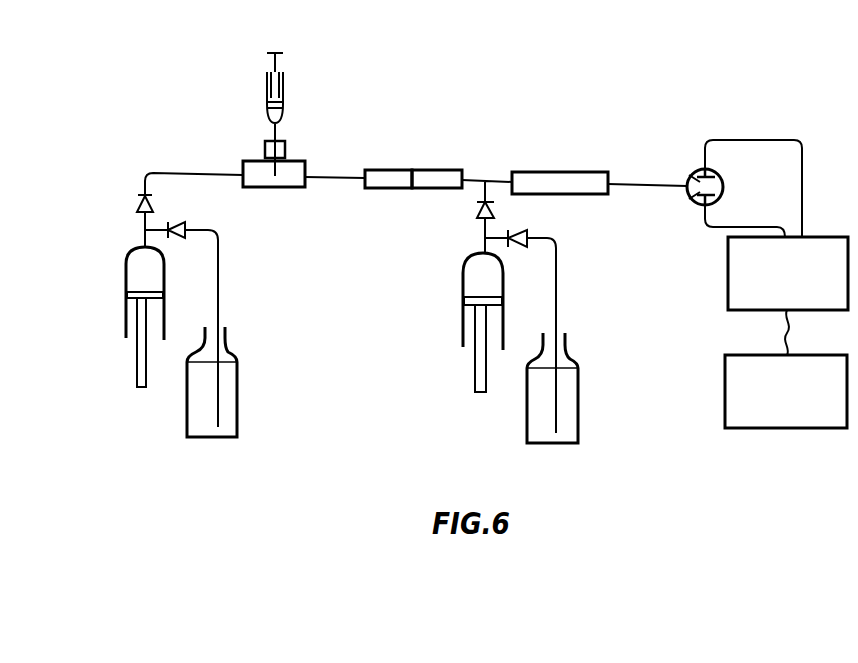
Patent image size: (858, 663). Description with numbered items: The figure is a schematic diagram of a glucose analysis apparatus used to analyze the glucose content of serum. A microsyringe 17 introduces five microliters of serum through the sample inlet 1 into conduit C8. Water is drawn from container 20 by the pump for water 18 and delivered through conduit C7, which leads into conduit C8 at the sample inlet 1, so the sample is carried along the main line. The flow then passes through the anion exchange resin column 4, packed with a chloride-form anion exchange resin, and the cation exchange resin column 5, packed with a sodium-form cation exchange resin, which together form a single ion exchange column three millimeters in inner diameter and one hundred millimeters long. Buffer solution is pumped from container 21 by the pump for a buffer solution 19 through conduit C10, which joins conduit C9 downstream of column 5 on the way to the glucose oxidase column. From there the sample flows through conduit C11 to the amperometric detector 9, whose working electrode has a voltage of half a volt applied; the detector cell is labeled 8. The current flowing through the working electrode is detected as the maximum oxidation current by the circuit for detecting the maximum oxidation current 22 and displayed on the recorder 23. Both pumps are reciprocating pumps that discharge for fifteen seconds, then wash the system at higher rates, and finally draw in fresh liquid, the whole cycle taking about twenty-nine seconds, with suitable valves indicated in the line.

The sample inlet 1 is at (293, 150).
The anion exchange resin column 4 is at (389, 170).
The cation exchange resin column 5 is at (441, 170).
The detector cell 8 is at (693, 184).
The amperometric detector 9 is at (723, 183).
The microsyringe 17 is at (292, 76).
The pump for water 18 is at (127, 272).
The pump for a buffer solution 19 is at (463, 287).
The container for water 20 is at (238, 383).
The container for buffer solution 21 is at (580, 381).
The circuit for detecting the maximum oxidation current 22 is at (788, 273).
The recorder 23 is at (786, 391).
The conduit c7 C7 is at (205, 172).
The conduit c8 C8 is at (332, 174).
The conduit c9 C9 is at (481, 179).
The conduit c10 C10 is at (493, 193).
The conduit c11 C11 is at (636, 184).